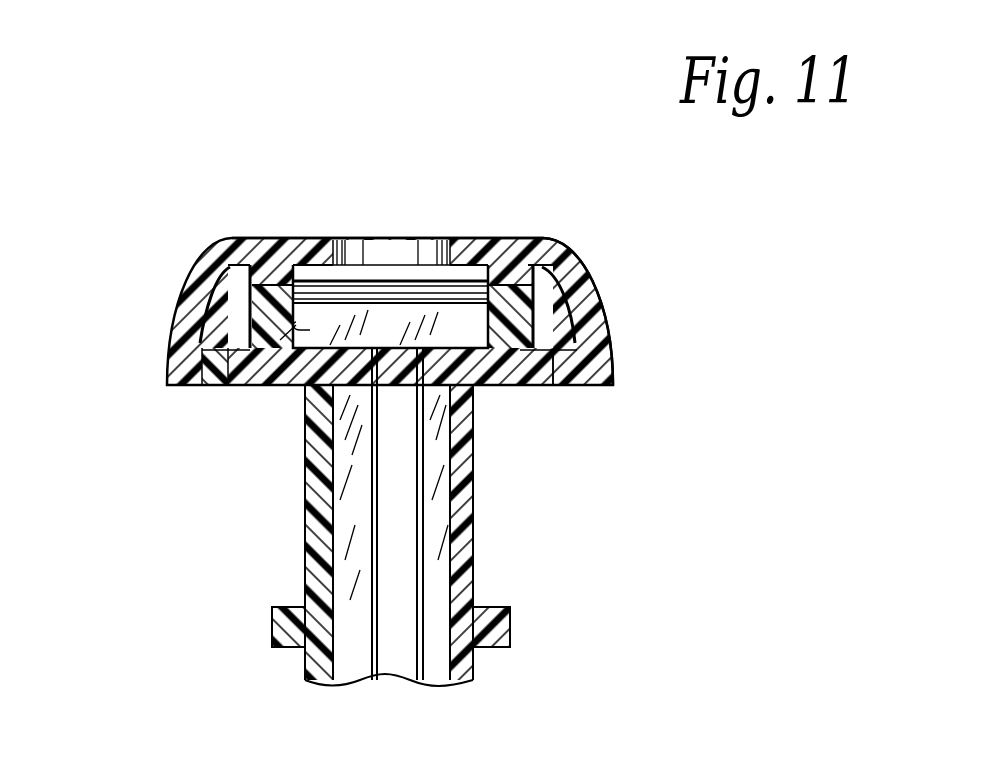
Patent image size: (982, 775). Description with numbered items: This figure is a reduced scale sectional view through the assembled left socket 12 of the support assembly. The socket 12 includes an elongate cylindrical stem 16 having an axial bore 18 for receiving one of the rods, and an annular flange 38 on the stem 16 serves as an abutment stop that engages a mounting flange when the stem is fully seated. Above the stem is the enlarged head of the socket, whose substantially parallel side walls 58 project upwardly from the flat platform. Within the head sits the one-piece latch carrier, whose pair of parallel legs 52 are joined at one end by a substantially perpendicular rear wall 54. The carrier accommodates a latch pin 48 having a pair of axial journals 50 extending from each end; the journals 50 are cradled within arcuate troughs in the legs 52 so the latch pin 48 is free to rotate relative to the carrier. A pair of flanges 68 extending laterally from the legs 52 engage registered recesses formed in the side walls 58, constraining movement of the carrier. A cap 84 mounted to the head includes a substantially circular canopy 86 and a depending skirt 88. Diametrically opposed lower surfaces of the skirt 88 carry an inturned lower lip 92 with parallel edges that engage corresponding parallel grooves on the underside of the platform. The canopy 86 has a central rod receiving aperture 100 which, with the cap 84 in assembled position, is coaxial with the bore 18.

The left socket 12 is at (258, 578).
The stem 16 is at (478, 510).
The axial bore 18 is at (402, 655).
The annular flange 38 is at (510, 615).
The latch pin 48 is at (410, 285).
The axial journals 50 is at (227, 307).
The legs 52 is at (568, 300).
The rear wall 54 is at (325, 322).
The side walls 58 is at (547, 240).
The flanges 68 is at (490, 330).
The cap 84 is at (222, 203).
The canopy 86 is at (245, 238).
The skirt 88 is at (205, 322).
The inturned lower lip 92 is at (203, 388).
The central rod receiving aperture 100 is at (388, 245).